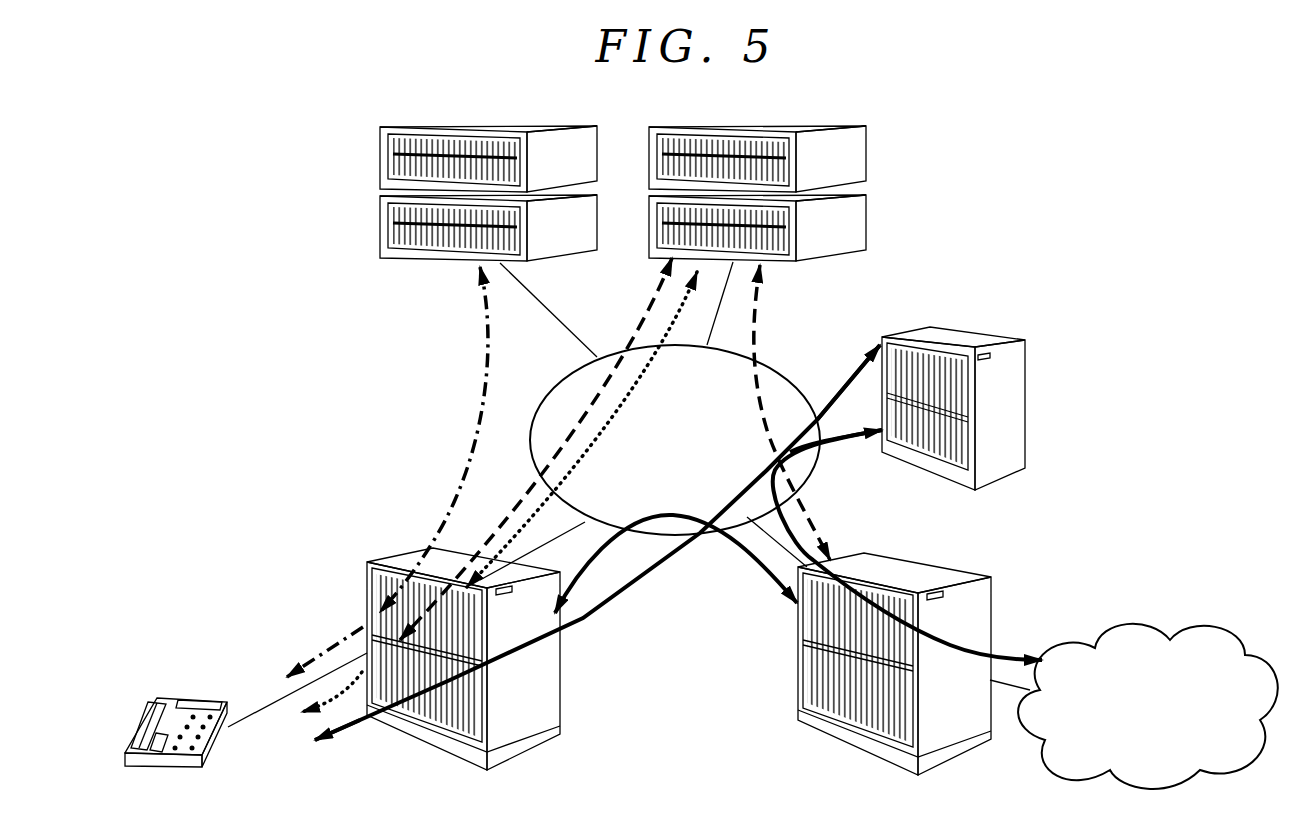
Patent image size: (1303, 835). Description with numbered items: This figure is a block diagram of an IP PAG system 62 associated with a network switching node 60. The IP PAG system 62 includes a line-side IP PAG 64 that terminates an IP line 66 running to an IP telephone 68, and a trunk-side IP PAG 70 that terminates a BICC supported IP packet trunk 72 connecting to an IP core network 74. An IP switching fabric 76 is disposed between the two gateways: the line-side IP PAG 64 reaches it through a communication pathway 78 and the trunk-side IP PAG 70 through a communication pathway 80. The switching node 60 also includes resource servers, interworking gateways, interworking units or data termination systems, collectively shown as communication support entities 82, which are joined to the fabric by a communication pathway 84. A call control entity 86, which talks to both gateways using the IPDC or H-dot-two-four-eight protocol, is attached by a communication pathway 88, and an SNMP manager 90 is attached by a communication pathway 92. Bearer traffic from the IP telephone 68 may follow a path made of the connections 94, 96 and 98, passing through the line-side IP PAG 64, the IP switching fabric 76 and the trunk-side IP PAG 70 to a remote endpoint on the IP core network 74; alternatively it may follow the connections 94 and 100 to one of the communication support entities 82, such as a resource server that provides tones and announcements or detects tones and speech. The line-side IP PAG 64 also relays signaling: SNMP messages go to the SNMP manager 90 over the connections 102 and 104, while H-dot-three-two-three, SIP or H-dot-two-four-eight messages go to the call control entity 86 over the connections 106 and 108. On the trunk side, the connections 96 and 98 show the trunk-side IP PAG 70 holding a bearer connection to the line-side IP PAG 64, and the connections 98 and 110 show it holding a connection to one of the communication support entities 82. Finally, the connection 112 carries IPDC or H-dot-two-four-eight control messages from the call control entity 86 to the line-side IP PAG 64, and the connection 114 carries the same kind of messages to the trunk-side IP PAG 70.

The network switching node 60 is at (345, 347).
The IP PAG system 62 is at (675, 595).
The line-side IP PAG 64 is at (547, 745).
The IP line 66 is at (263, 703).
The IP telephone 68 is at (153, 717).
The trunk-side IP PAG 70 is at (797, 670).
The IP packet trunk 72 is at (1015, 690).
The IP core network 74 is at (1158, 622).
The IP switching fabric 76 is at (560, 380).
The communication pathway 78 is at (548, 548).
The communication pathway 80 is at (770, 555).
The communication support entities 82 is at (1020, 388).
The communication pathway 84 is at (833, 387).
The call control entity 86 is at (858, 143).
The communication pathway 88 is at (720, 300).
The SNMP manager 90 is at (384, 152).
The communication pathway 92 is at (552, 315).
The bearer path connection 94 is at (355, 735).
The bearer path connection 96 is at (598, 568).
The bearer path connection 98 is at (1002, 655).
The bearer path connection 100 is at (605, 615).
The signaling relay connection 102 is at (342, 635).
The signaling relay connection 104 is at (458, 478).
The signaling relay connection 106 is at (315, 706).
The signaling relay connection 108 is at (662, 272).
The bearer path connection 110 is at (840, 455).
The control message connection 112 is at (640, 318).
The control message connection 114 is at (766, 328).